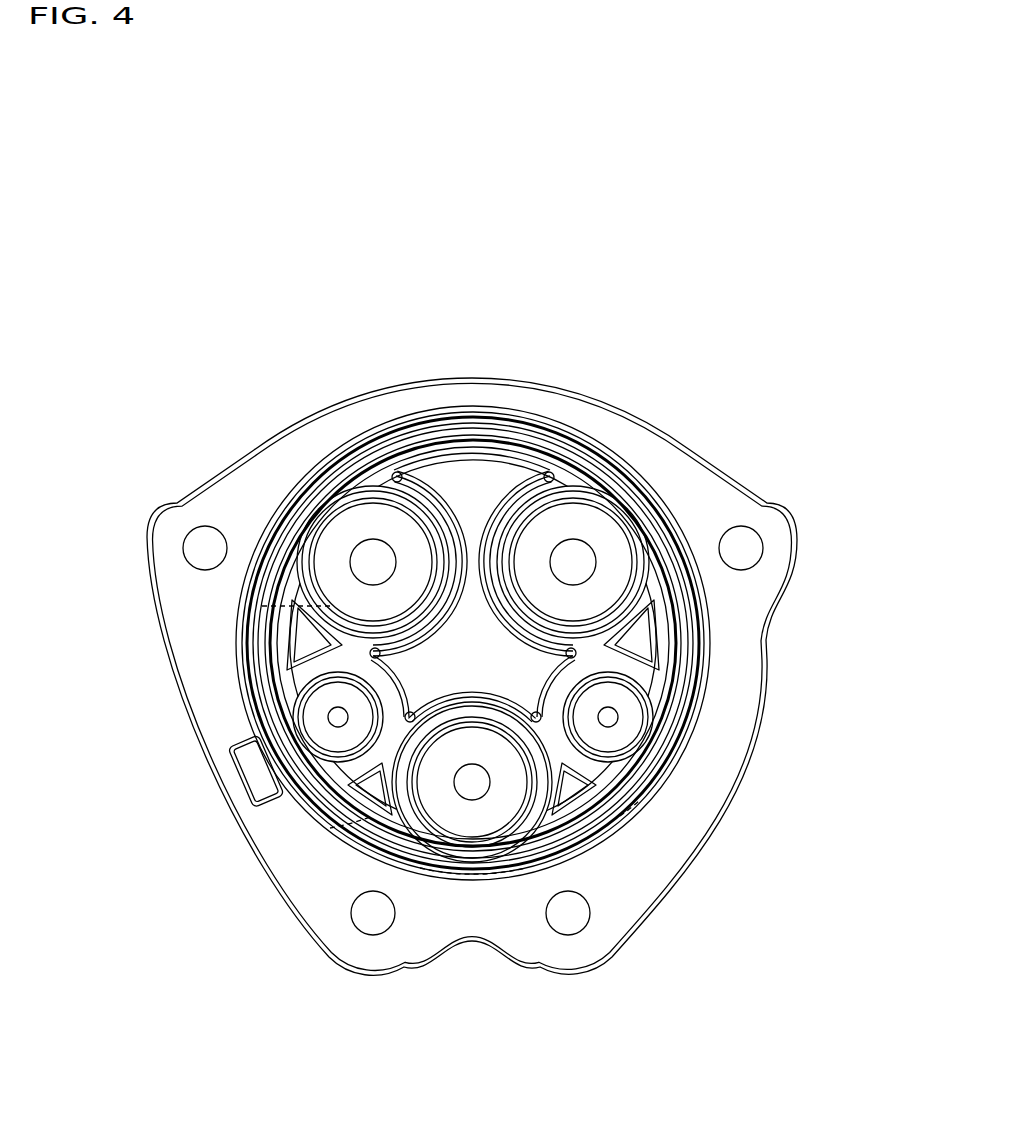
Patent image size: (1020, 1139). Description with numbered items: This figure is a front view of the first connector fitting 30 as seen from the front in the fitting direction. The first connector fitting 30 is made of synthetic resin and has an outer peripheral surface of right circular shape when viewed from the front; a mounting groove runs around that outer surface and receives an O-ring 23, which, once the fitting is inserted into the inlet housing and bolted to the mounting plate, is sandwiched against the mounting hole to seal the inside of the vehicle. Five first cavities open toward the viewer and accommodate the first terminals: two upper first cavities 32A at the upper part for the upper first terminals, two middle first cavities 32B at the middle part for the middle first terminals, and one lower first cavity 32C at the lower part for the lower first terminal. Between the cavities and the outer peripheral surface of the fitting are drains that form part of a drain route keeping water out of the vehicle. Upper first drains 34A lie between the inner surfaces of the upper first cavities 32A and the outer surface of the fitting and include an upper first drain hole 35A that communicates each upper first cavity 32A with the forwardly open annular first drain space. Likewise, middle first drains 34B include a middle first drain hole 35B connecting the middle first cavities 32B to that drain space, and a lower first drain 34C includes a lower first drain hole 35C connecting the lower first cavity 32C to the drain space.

The first connector fitting 30 is at (437, 278).
The O-ring 23 is at (462, 428).
The upper first cavities 32A is at (373, 567).
The middle first cavities 32B is at (335, 717).
The lower first cavity 32C is at (476, 790).
The upper first drains 34A is at (613, 604).
The middle first drains 34B is at (323, 830).
The lower first drain 34C is at (455, 880).
The upper first drain hole 35A is at (646, 640).
The middle first drain hole 35B is at (365, 792).
The lower first drain hole 35C is at (471, 707).